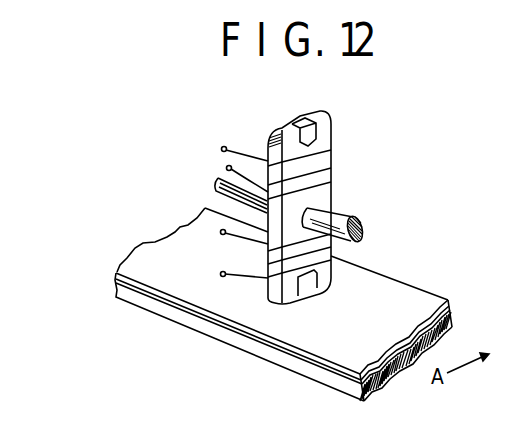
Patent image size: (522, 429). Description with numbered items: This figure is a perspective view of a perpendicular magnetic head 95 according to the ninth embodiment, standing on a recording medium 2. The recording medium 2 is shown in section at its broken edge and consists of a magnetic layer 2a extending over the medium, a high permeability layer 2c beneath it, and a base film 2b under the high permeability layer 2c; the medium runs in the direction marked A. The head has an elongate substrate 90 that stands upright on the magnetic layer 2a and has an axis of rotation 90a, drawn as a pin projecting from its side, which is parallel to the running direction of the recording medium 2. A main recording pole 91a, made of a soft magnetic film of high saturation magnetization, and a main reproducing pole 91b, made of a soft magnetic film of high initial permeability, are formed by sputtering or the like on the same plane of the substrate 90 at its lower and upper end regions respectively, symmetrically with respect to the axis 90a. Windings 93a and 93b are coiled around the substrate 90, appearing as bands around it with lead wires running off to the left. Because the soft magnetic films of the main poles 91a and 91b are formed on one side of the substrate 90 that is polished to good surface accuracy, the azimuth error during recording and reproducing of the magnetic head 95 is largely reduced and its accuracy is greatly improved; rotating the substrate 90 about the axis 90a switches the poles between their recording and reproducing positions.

The recording medium 2 is at (389, 292).
The magnetic layer 2a is at (450, 303).
The base film 2b is at (448, 326).
The high permeability layer 2c is at (449, 309).
The substrate 90 is at (324, 195).
The axis of rotation 90a is at (359, 218).
The main recording pole 91a is at (309, 285).
The main reproducing pole 91b is at (318, 130).
The winding 93a is at (246, 276).
The winding 93b is at (250, 156).
The perpendicular magnetic head 95 is at (361, 198).